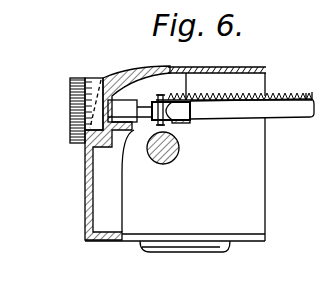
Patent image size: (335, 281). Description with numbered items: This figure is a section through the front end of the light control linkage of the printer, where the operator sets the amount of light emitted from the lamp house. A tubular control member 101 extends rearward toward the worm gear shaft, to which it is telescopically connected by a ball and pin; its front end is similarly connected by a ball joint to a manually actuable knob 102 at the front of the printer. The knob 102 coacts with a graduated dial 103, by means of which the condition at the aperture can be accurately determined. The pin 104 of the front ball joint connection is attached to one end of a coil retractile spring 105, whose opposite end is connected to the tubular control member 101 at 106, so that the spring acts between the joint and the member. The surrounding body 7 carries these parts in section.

The housing 7 is at (84, 201).
The tubular control member 101 is at (288, 105).
The manually actuable knob 102 is at (72, 108).
The graduated dial 103 is at (95, 78).
The pin 104 is at (158, 96).
The coil retractile spring 105 is at (231, 93).
The connection point of spring to member 106 is at (311, 90).